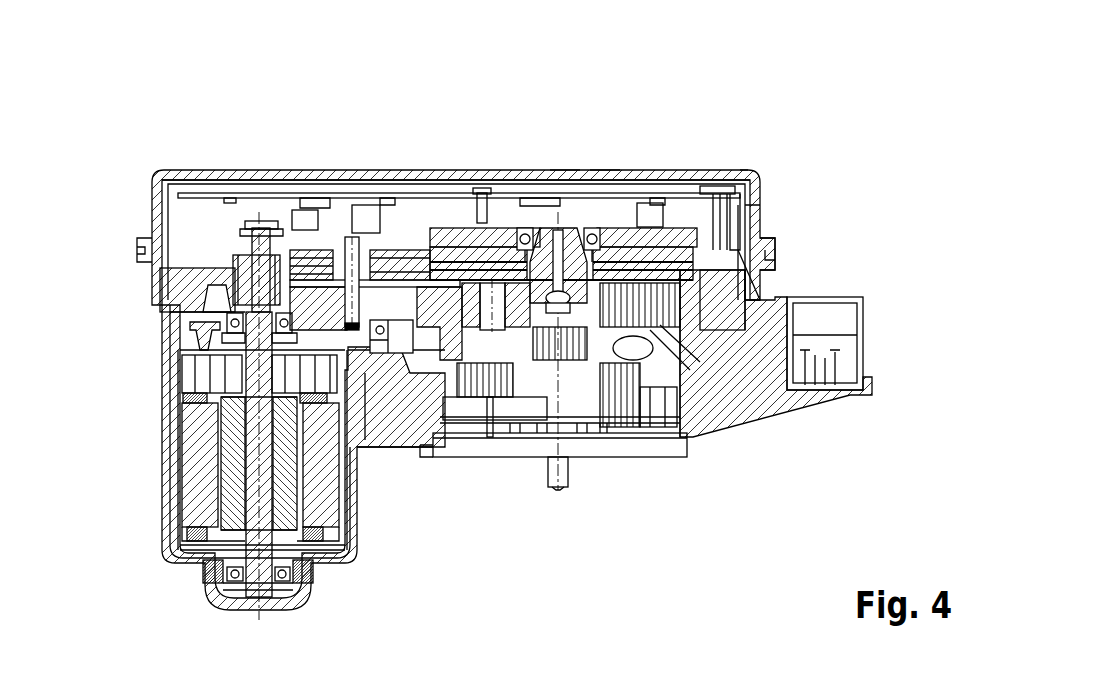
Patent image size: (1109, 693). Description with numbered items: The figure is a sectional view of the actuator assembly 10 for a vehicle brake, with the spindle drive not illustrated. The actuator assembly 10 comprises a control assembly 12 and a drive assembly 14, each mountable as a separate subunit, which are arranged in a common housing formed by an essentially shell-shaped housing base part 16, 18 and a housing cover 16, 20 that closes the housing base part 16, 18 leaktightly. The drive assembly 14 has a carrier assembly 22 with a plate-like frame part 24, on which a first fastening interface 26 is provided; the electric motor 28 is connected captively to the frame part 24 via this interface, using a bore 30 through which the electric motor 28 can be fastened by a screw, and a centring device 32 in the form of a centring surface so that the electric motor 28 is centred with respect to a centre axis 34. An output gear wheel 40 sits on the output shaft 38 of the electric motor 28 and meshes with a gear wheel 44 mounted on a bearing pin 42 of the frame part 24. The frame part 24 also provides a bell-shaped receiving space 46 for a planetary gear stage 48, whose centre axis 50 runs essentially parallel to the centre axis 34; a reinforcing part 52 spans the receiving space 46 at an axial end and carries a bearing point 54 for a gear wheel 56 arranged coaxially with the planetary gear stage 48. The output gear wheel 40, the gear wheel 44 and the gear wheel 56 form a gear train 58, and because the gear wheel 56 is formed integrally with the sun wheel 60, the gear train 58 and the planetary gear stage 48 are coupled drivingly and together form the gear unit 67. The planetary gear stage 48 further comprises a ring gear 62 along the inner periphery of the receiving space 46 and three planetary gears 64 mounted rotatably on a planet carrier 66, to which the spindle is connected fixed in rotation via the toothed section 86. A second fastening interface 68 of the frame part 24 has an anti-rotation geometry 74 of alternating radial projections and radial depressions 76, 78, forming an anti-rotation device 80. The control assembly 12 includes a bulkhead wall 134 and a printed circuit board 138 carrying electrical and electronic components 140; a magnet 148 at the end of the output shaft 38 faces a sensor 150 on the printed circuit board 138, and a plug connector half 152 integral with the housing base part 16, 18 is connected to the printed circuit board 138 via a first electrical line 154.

The actuator assembly 10 is at (695, 96).
The control assembly 12 is at (120, 172).
The drive assembly 14 is at (140, 410).
The housing base part 16, 18 is at (803, 396).
The housing cover part 16, 20 is at (775, 238).
The carrier assembly 22 is at (410, 266).
The frame part 24 is at (388, 280).
The first fastening interface 26 is at (293, 352).
The electric motor 28 is at (172, 452).
The bore 30 is at (192, 327).
The centring device 32 is at (360, 243).
The centre axis 34 is at (258, 567).
The output shaft 38 is at (243, 492).
The output gear wheel 40 is at (300, 262).
The bearing pin 42 is at (297, 313).
The gear wheel 44 is at (313, 245).
The receiving space 46 is at (699, 186).
The planetary gear stage 48 is at (568, 158).
The centre axis 50 is at (563, 447).
The reinforcing part 52 is at (522, 228).
The bearing point 54 is at (535, 225).
The gear wheel 56 is at (640, 270).
The gear train 58 is at (600, 150).
The sun wheel 60 is at (578, 296).
The ring gear 62 is at (675, 272).
The planetary gears 64 is at (655, 312).
The planet carrier 66 is at (665, 420).
The gear unit 67 is at (418, 100).
The second fastening interface 68 is at (656, 405).
The anti-rotation geometry 74 is at (668, 413).
The carrier plate 76, 78 is at (602, 445).
The anti-rotation device 80 is at (550, 425).
The toothed section 86 is at (562, 362).
The bulkhead wall 134 is at (455, 240).
The printed circuit board 138 is at (237, 193).
The electrical and electronic components 140 is at (236, 305).
The magnet 148 is at (258, 220).
The sensor 150 is at (265, 230).
The plug connector half 152 is at (852, 290).
The first electrical line 154 is at (742, 214).